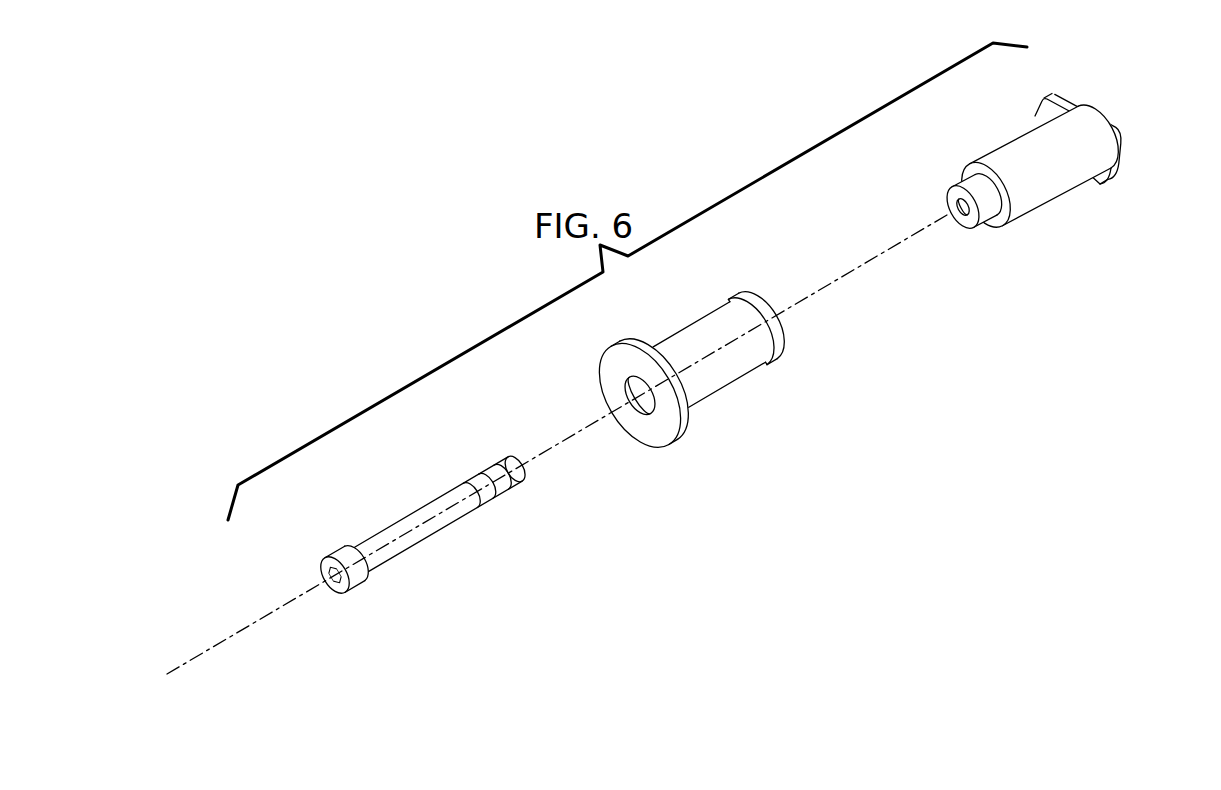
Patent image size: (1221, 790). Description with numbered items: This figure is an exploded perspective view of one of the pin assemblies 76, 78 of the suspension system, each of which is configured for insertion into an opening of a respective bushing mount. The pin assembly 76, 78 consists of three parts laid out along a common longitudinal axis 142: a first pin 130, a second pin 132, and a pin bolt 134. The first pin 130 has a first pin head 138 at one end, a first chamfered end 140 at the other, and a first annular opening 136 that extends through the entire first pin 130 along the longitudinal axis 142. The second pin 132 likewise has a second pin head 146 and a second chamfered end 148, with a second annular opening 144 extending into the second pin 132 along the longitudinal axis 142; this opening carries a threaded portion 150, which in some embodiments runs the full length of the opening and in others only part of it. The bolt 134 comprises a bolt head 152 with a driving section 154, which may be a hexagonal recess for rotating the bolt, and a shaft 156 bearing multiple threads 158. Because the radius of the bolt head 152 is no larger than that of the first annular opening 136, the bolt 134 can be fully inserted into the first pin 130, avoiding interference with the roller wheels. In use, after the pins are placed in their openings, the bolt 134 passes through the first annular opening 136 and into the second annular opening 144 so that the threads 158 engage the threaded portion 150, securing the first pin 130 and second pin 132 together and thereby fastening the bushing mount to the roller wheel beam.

The pin assembly 76 is at (627, 370).
The pin assembly 78 is at (627, 281).
The first pin 130 is at (720, 391).
The second pin 132 is at (1055, 200).
The pin bolt 134 is at (395, 543).
The first annular opening 136 is at (640, 413).
The first pin head 138 is at (687, 427).
The first chamfered end 140 is at (772, 350).
The longitudinal axis 142 is at (246, 627).
The second annular opening 144 is at (991, 239).
The second pin head 146 is at (1117, 125).
The second chamfered end 148 is at (982, 231).
The threaded portion 150 is at (950, 192).
The bolt head 152 is at (332, 549).
The driving section 154 is at (330, 590).
The shaft 156 is at (427, 540).
The threads 158 is at (485, 471).